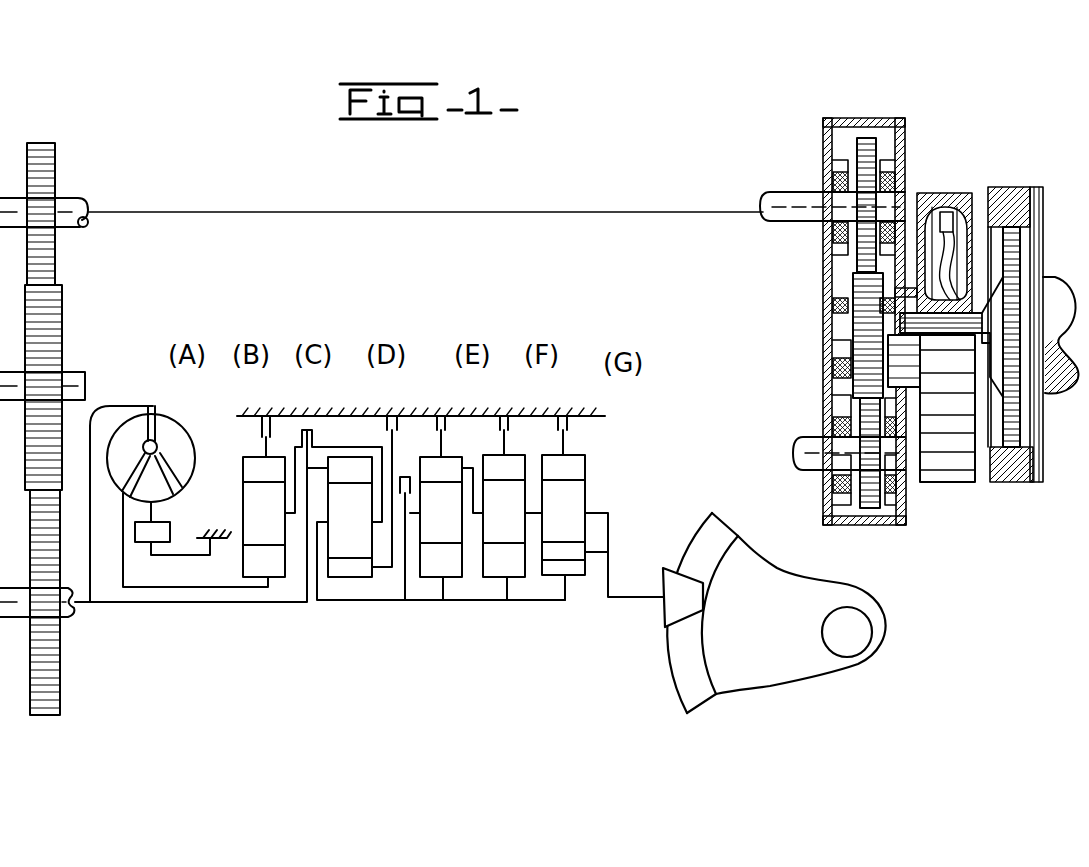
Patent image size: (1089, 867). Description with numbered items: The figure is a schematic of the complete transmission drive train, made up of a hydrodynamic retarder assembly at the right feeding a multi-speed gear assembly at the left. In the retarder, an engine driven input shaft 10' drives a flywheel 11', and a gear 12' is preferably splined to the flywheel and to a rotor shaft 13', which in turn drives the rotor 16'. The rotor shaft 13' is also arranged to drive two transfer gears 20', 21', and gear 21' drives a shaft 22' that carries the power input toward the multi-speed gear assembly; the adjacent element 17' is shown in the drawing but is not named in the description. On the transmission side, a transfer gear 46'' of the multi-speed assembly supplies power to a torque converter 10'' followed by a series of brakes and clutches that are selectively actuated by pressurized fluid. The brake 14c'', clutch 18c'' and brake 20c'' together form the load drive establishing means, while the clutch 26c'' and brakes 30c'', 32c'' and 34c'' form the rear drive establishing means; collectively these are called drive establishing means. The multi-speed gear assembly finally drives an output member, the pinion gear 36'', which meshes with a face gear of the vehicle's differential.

The torque converter 10'' is at (191, 470).
The brake 14c'' is at (226, 476).
The clutch 18c'' is at (309, 448).
The brake 20c'' is at (426, 487).
The clutch 26c'' is at (393, 487).
The brake 30c'' is at (464, 487).
The brake 32c'' is at (533, 487).
The brake 34c'' is at (602, 489).
The pinion gear 36'' is at (738, 613).
The transfer gear 46'' is at (58, 429).
The shaft 22' is at (828, 186).
The transfer gear 21' is at (901, 201).
The rotor 16' is at (951, 235).
The transfer gear 20' is at (825, 385).
The rotor shaft 13' is at (842, 321).
The gear 12' is at (1044, 337).
The input shaft 10' is at (1066, 355).
The clutch 17' is at (931, 444).
The flywheel 11' is at (1024, 356).